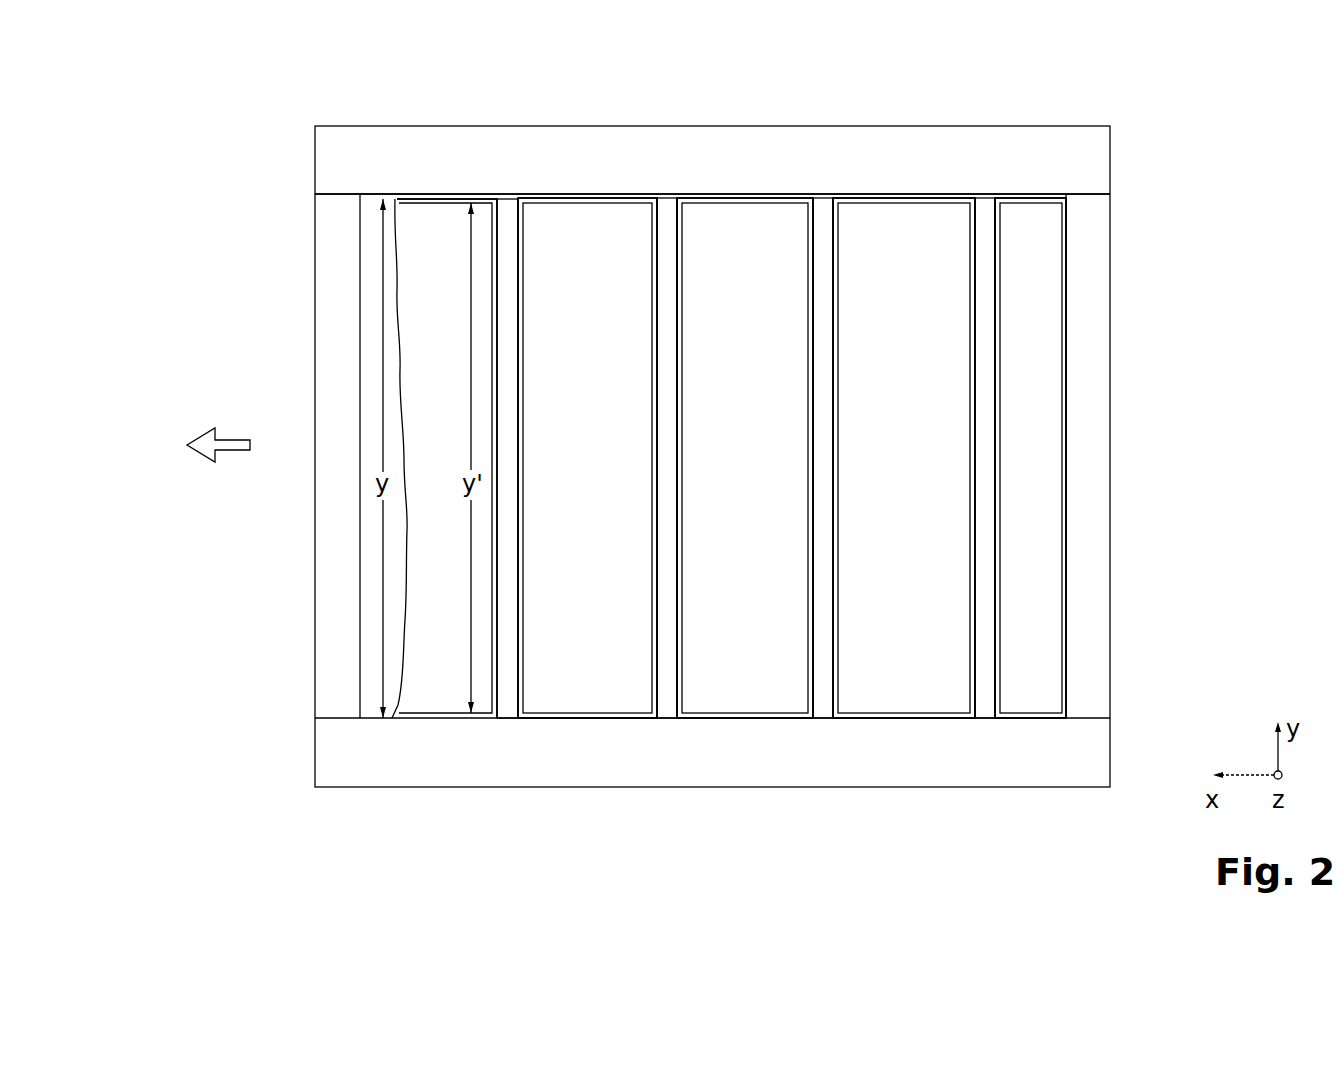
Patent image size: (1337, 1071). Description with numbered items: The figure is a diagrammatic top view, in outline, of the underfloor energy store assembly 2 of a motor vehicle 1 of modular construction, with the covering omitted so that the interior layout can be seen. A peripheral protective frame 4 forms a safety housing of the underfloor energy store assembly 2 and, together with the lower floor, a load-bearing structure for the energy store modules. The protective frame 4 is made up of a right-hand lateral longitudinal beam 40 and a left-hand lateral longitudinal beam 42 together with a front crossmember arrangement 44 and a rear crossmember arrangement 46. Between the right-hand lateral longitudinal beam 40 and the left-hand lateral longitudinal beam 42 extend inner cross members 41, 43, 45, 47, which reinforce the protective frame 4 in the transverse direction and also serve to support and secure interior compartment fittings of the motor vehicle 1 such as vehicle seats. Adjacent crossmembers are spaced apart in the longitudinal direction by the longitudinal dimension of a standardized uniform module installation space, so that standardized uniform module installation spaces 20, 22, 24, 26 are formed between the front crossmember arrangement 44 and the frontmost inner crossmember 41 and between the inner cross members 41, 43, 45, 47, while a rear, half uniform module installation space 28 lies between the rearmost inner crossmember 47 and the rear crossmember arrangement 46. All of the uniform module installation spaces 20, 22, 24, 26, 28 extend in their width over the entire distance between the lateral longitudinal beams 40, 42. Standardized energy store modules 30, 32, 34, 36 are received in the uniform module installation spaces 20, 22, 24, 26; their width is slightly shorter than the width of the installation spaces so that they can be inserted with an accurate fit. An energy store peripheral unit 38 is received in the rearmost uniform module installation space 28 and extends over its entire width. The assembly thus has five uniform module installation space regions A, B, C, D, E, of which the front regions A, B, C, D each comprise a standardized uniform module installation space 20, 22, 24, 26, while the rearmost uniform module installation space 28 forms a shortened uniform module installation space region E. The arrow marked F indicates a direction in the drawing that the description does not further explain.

The motor vehicle 1 is at (1240, 238).
The underfloor energy store assembly 2 is at (1170, 155).
The peripheral protective frame 4 is at (975, 115).
The uniform module installation space 20 is at (402, 728).
The uniform module installation space 22 is at (551, 728).
The uniform module installation space 24 is at (745, 728).
The uniform module installation space 26 is at (880, 728).
The rear half uniform module installation space 28 is at (1032, 728).
The standardized energy store module 30 is at (449, 227).
The standardized energy store module 32 is at (547, 225).
The standardized energy store module 34 is at (752, 227).
The standardized energy store module 36 is at (880, 223).
The energy store peripheral unit 38 is at (1015, 225).
The right-hand lateral longitudinal beam 40 is at (714, 150).
The frontmost inner crossmember 41 is at (503, 718).
The left-hand lateral longitudinal beam 42 is at (717, 762).
The inner crossmember 43 is at (662, 718).
The front crossmember arrangement 44 is at (332, 512).
The inner crossmember 45 is at (828, 718).
The rear crossmember arrangement 46 is at (1098, 440).
The rearmost inner crossmember 47 is at (987, 718).
The uniform module installation space region A is at (399, 185).
The uniform module installation space region B is at (593, 185).
The uniform module installation space region C is at (798, 185).
The uniform module installation space region D is at (928, 185).
The shortened uniform module installation space region E is at (1053, 187).
The force direction F is at (218, 435).